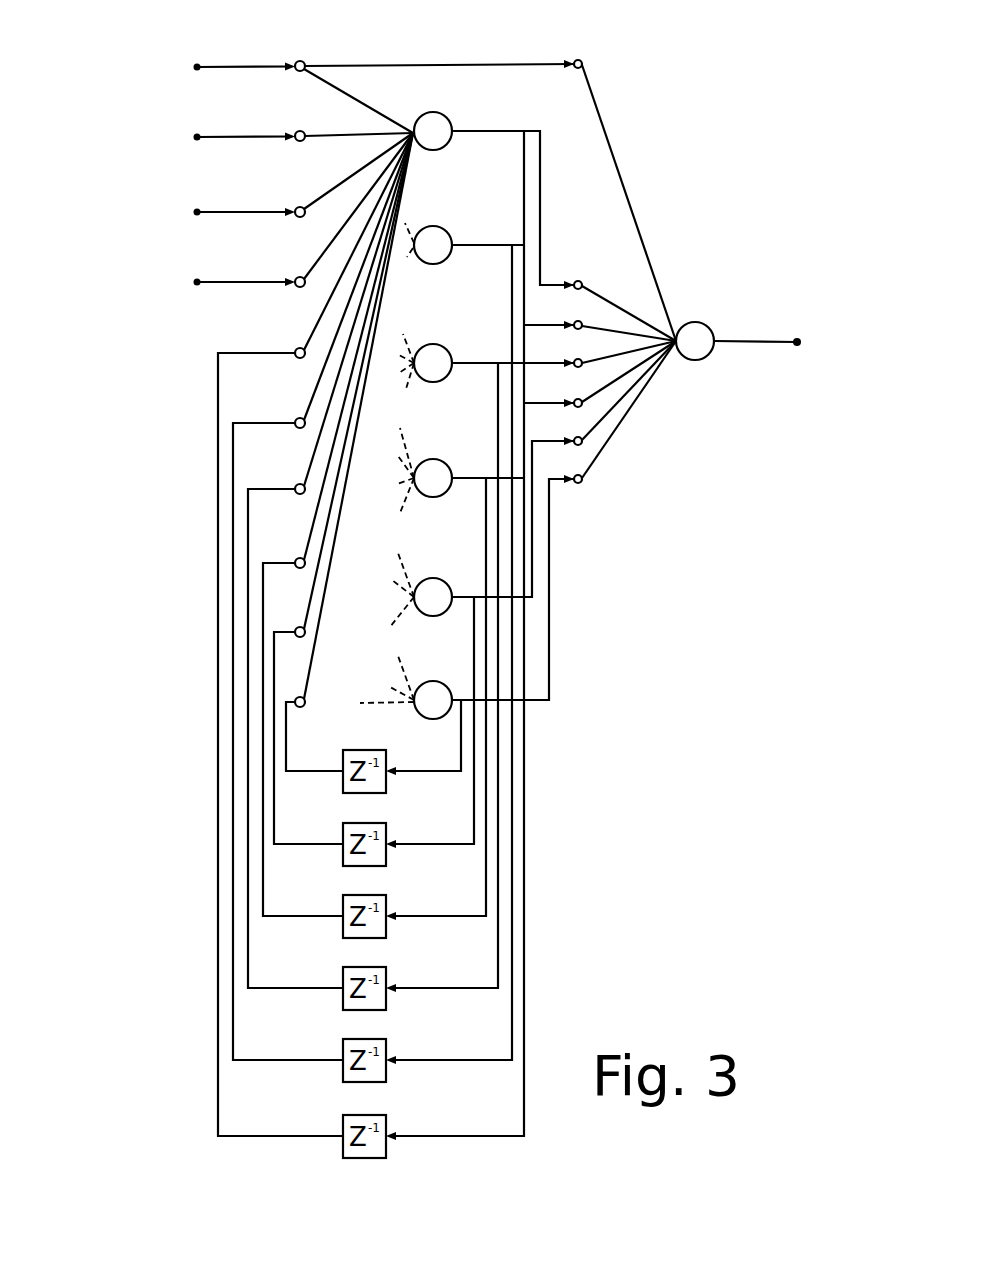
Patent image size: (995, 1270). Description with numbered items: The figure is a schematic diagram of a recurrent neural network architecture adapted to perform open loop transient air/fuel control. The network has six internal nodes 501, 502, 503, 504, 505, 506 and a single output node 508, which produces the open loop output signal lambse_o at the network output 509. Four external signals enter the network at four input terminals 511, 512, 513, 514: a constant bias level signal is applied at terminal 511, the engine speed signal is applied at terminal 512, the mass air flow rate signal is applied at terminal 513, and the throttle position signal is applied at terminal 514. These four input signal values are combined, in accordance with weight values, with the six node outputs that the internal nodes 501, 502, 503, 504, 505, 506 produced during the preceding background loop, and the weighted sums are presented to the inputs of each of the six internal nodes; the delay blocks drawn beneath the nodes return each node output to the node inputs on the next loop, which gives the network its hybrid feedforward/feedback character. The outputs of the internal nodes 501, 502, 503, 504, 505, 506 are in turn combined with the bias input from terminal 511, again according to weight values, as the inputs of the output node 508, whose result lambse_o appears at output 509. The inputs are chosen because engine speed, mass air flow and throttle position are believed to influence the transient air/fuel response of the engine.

The internal node 501 is at (441, 113).
The internal node 502 is at (441, 227).
The internal node 503 is at (441, 345).
The internal node 504 is at (441, 460).
The internal node 505 is at (422, 578).
The internal node 506 is at (423, 678).
The output node 508 is at (694, 323).
The output (lambse_o) 509 is at (797, 347).
The input terminal 511 is at (304, 56).
The input terminal 512 is at (303, 126).
The input terminal 513 is at (304, 203).
The input terminal 514 is at (304, 277).